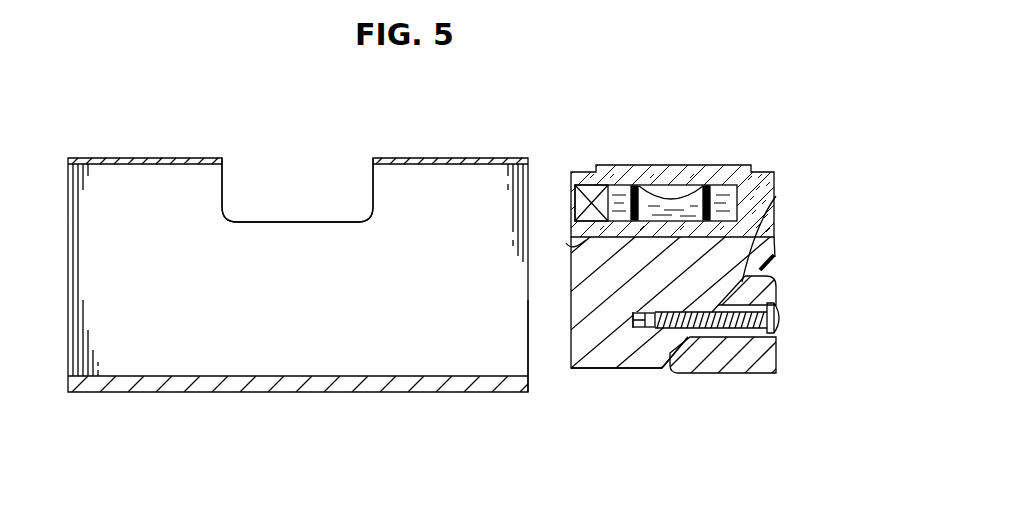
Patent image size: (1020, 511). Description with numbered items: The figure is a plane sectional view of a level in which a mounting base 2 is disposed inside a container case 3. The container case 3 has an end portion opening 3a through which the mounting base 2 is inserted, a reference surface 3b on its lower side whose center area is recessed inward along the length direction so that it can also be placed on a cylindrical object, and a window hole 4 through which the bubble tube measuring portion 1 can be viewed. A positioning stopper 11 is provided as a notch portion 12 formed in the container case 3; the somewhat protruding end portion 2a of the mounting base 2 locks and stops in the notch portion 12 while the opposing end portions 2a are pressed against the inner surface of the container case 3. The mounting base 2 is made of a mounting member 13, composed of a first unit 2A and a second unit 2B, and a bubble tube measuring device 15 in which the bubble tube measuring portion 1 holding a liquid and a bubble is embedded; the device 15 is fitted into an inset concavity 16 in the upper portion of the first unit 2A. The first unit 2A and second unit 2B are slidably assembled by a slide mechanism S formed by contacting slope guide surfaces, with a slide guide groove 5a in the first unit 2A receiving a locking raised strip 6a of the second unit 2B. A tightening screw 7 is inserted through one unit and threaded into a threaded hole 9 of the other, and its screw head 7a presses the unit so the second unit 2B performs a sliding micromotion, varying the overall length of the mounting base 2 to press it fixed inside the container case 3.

The container case 3 is at (120, 172).
The end portion opening 3a is at (525, 345).
The reference surface 3b is at (325, 392).
The window hole 4 is at (287, 222).
The positioning stopper 11 is at (243, 136).
The notch portion 12 is at (373, 160).
The mounting base 2 is at (860, 209).
The end portion 2a is at (721, 166).
The first unit 2A is at (770, 247).
The second unit 2B is at (778, 358).
The bubble tube measuring portion 1 is at (600, 200).
The bubble tube measuring device 15 is at (647, 166).
The inset concavity 16 is at (566, 243).
The locking raised strip 6a is at (776, 196).
The slide guide groove 5a is at (777, 260).
The tightening screw 7 is at (660, 330).
The screw head 7a is at (784, 318).
The threaded hole 9 is at (637, 330).
The mounting member 13 is at (590, 350).
The slide mechanism S is at (671, 379).